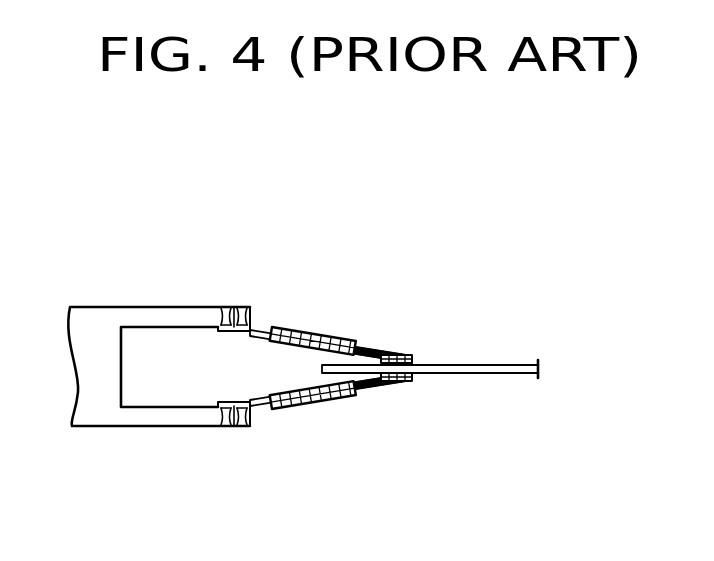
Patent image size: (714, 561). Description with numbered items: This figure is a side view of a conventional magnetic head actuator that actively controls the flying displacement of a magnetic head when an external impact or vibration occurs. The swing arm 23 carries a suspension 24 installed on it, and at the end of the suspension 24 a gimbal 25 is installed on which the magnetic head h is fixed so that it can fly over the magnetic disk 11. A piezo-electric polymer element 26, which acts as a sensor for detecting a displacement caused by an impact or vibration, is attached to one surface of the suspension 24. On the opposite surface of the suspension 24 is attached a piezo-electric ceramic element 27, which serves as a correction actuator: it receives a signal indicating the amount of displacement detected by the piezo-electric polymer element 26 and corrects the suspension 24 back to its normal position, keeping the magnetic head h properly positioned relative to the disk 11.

The swing arm 23 is at (95, 318).
The suspension 24 is at (365, 350).
The gimbal 25 is at (410, 353).
The piezo-electric polymer element 26 is at (300, 334).
The piezo-electric ceramic element 27 is at (303, 396).
The magnetic disk 11 is at (522, 365).
The magnetic head h is at (412, 363).